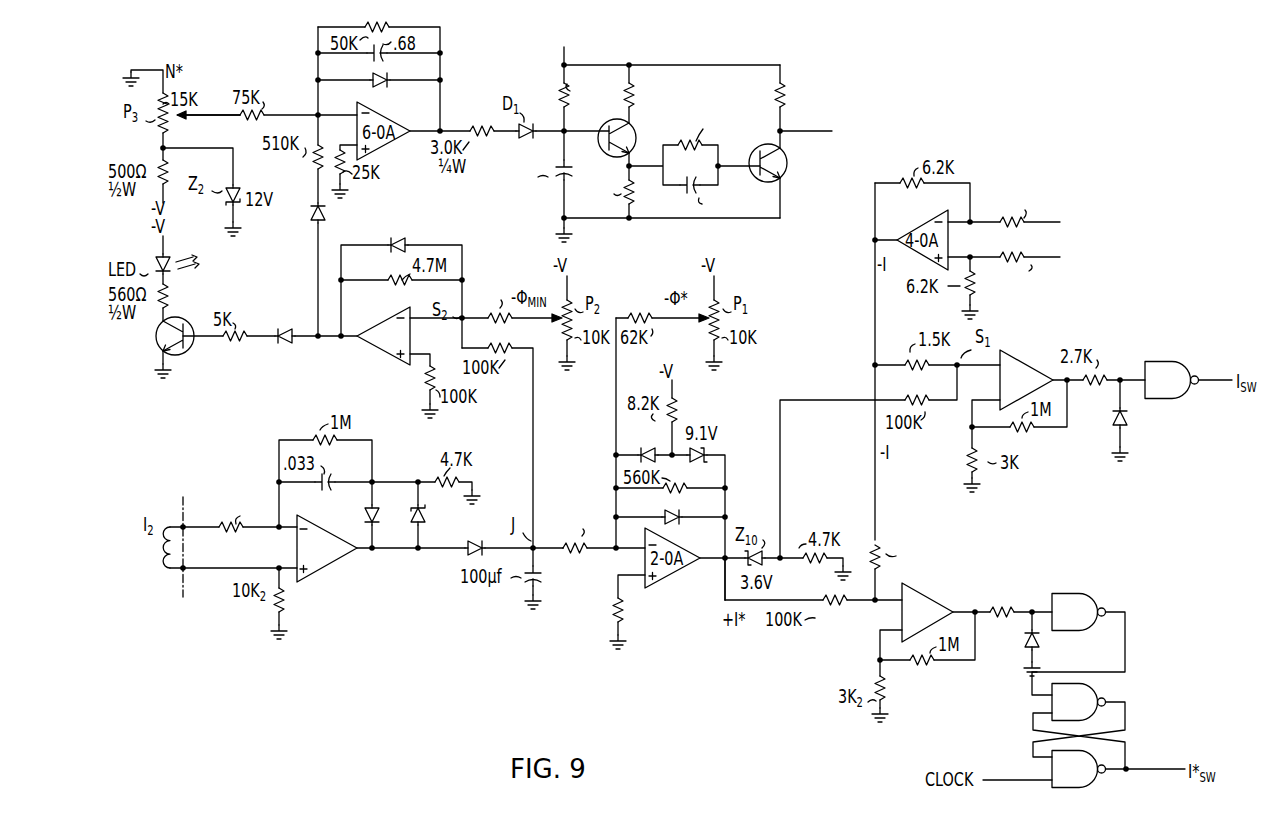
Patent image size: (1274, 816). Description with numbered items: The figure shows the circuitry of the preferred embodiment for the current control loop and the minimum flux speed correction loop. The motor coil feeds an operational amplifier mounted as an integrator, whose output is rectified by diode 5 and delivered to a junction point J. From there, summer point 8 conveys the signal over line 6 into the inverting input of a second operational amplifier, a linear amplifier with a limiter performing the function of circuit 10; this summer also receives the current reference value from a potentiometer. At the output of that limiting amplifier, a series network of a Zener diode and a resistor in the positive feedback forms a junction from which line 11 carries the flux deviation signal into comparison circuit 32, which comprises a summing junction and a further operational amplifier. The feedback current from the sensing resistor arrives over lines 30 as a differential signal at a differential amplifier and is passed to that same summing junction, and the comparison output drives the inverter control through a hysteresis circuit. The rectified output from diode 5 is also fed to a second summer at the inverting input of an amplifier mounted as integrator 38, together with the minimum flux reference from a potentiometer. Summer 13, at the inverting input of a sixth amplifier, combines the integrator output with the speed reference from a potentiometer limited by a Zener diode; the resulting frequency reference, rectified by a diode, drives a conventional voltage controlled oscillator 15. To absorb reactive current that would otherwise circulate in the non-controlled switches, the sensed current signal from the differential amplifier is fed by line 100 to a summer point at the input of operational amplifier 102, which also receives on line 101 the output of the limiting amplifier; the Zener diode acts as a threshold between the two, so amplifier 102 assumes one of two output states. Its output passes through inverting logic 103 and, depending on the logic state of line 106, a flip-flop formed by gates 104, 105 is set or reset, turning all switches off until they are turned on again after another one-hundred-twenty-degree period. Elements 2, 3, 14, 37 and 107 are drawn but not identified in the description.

The input resistor 2 is at (203, 526).
The operational amplifier 1-OA 3 is at (333, 596).
The diode 5 is at (476, 518).
The line 6 is at (605, 528).
The summer point 8 is at (615, 557).
The circuit 10 is at (707, 540).
The line 11 is at (781, 504).
The summer 13 is at (318, 114).
The output node 14 is at (549, 141).
The voltage controlled oscillator 15 is at (705, 96).
The lines 30 is at (1062, 232).
The comparison circuit 32 is at (1050, 359).
The resistor 37 is at (531, 325).
The integrator 38 is at (380, 387).
The line 100 is at (882, 528).
The line 101 is at (723, 585).
The operational amplifier 102 is at (914, 588).
The inverting logic 103 is at (1074, 593).
The flip-flop gate 104 is at (1046, 700).
The flip-flop gate 105 is at (1052, 768).
The line 106 is at (1126, 636).
The output line 107 is at (1160, 757).